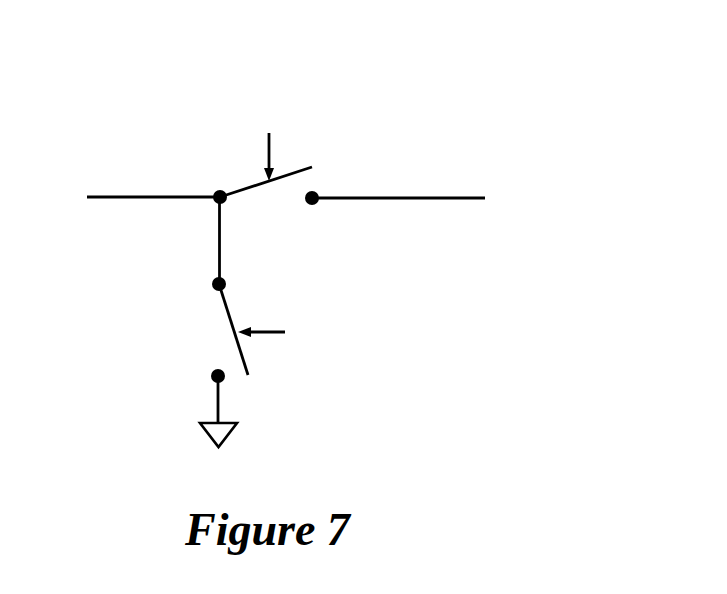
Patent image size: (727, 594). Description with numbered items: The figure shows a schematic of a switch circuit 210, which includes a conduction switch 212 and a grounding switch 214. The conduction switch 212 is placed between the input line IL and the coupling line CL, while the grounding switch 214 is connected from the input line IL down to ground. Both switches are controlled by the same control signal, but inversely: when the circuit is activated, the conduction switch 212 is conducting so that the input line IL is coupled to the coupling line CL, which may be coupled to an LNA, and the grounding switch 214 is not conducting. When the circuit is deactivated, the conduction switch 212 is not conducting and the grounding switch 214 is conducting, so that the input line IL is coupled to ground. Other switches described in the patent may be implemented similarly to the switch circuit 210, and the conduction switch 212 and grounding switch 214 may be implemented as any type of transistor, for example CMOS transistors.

The switch circuit 210 is at (321, 231).
The conduction switch 212 is at (276, 205).
The grounding switch 214 is at (210, 320).